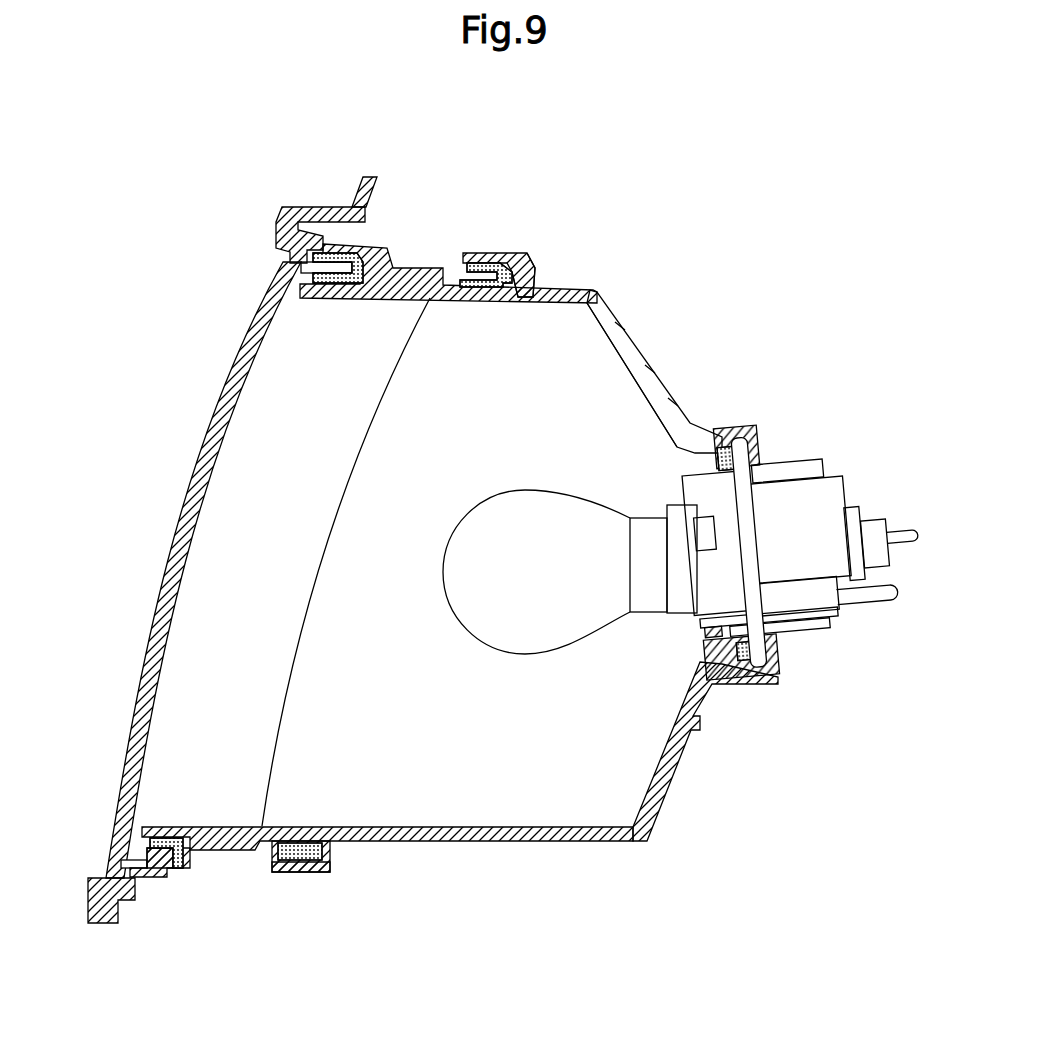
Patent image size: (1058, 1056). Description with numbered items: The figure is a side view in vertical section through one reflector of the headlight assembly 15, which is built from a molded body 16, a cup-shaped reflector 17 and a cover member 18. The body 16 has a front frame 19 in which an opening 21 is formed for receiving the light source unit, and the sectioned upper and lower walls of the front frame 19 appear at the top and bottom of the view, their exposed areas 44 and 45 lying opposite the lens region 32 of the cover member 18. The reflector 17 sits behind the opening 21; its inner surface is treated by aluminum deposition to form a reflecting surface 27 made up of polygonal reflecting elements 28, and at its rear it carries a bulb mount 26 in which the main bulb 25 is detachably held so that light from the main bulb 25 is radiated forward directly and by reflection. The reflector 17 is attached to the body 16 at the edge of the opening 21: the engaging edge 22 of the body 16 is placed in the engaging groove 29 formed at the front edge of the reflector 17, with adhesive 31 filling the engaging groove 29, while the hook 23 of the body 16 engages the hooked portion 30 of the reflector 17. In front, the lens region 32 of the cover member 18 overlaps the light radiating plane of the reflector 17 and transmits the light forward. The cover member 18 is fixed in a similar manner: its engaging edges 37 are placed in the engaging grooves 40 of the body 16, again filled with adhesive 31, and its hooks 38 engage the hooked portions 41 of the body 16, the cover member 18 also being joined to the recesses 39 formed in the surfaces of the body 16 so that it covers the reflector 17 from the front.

The headlight assembly 15 is at (250, 190).
The body 16 is at (106, 926).
The reflector 17 is at (650, 359).
The cover member 18 is at (222, 373).
The front frame 19 is at (240, 853).
The opening 21 is at (232, 568).
The engaging edge 22 is at (472, 258).
The hook 23 is at (290, 870).
The main bulb 25 is at (478, 582).
The bulb mount 26 is at (742, 438).
The reflecting surface 27 is at (665, 752).
The reflecting element 28 is at (666, 412).
The engaging groove 29 is at (509, 262).
The hooked portion 30 is at (310, 873).
The adhesive 31 is at (338, 282).
The lens region 32 is at (188, 512).
The engaging edge 37 is at (330, 256).
The hook 38 is at (176, 866).
The recess 39 is at (290, 262).
The engaging groove 40 is at (358, 247).
The hooked portion 41 is at (179, 870).
The exposed area 44 is at (285, 206).
The exposed area 45 is at (90, 895).